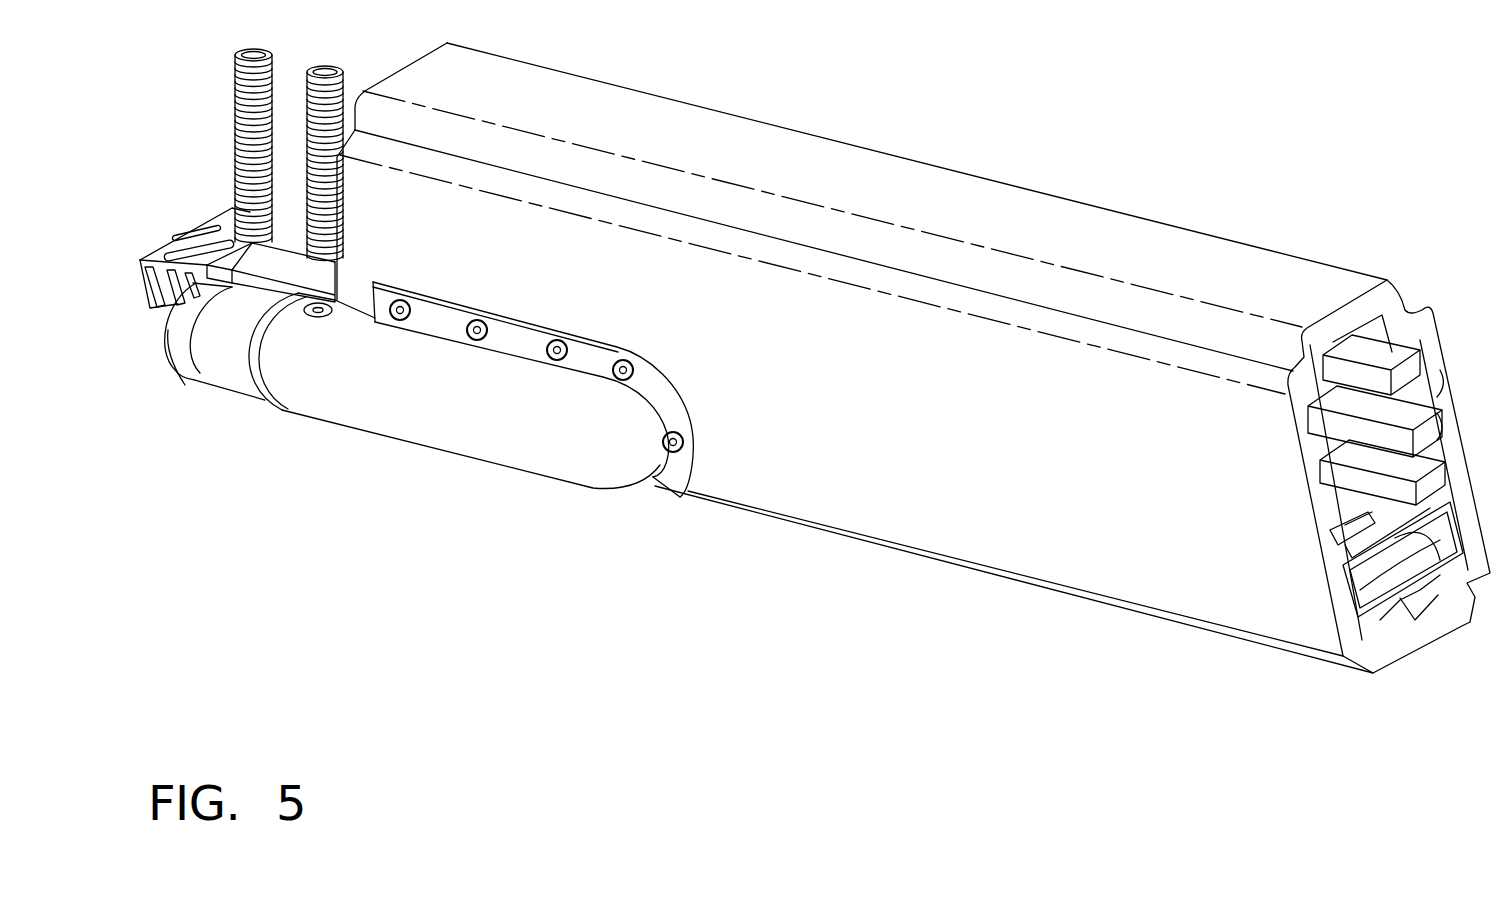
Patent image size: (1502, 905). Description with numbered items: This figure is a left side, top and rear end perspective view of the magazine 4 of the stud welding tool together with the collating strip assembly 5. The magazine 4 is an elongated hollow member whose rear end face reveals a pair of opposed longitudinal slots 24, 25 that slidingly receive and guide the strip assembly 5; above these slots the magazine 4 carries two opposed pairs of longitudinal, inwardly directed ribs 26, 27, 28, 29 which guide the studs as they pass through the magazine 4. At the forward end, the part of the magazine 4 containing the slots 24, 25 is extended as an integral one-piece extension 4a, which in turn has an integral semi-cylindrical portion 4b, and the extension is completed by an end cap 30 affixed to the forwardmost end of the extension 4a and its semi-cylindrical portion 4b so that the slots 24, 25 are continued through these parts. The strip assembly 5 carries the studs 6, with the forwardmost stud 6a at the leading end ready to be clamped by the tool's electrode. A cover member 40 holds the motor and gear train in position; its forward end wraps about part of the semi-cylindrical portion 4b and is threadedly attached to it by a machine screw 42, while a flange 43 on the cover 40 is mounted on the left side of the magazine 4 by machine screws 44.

The magazine 4 is at (930, 494).
The extension 4a is at (303, 283).
The semi-cylindrical portion 4b is at (233, 349).
The strip assembly 5 is at (152, 238).
The stud 6 is at (325, 72).
The forwardmost stud 6a is at (252, 55).
The longitudinal slot 24 is at (1347, 577).
The longitudinal slot 25 is at (1433, 598).
The rib 26 is at (1328, 433).
The rib 27 is at (1343, 490).
The rib 28 is at (1413, 330).
The rib 29 is at (1440, 392).
The end cap 30 is at (185, 356).
The cover member 40 is at (450, 427).
The machine screw 42 is at (318, 318).
The flange 43 is at (587, 347).
The machine screws 44 is at (410, 293).